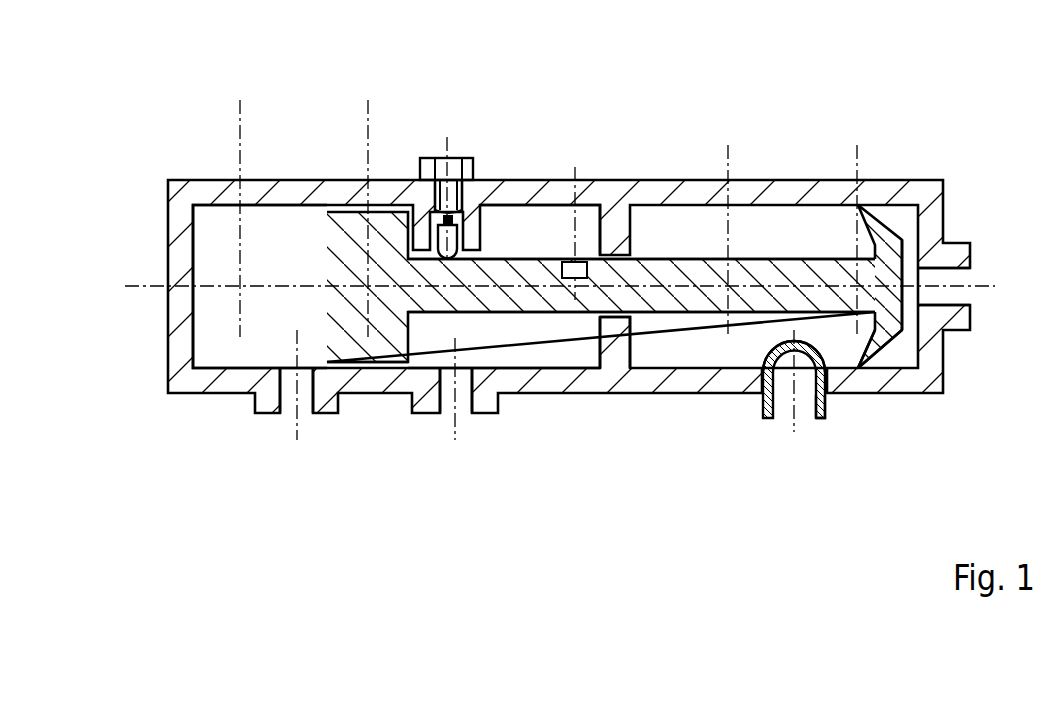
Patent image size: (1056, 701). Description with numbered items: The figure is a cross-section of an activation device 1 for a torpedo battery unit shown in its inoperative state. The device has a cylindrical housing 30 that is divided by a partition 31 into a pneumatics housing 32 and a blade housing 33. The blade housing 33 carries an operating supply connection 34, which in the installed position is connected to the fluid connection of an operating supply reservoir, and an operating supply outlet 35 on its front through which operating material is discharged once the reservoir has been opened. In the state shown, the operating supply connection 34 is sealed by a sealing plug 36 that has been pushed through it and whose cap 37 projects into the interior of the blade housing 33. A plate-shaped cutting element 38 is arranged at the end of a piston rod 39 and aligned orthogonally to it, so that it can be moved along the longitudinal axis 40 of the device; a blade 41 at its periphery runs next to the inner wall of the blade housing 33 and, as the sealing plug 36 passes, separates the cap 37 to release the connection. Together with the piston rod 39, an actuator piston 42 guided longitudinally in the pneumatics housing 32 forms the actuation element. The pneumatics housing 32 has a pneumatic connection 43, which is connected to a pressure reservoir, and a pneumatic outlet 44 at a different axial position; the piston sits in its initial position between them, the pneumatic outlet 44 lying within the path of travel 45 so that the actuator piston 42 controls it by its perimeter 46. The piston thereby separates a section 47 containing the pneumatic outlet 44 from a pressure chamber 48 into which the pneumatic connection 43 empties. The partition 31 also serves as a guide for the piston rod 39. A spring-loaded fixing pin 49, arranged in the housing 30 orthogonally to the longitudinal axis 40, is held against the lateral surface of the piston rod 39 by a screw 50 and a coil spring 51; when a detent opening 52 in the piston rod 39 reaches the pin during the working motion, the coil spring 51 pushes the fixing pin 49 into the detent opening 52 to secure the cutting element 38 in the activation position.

The activation device 1 is at (513, 457).
The cylindrical housing 30 is at (573, 372).
The partition 31 is at (615, 345).
The pneumatics housing 32 is at (521, 222).
The blade housing 33 is at (906, 225).
The operating supply connection 34 is at (778, 432).
The operating supply outlet 35 is at (945, 277).
The sealing plug 36 is at (823, 420).
The cap 37 is at (763, 422).
The cutting element 38 is at (888, 248).
The piston rod 39 is at (645, 277).
The longitudinal axis 40 is at (993, 286).
The blade 41 is at (860, 365).
The actuator piston 42 is at (392, 228).
The pneumatic connection 43 is at (448, 395).
The pneumatic outlet 44 is at (292, 395).
The path of travel 45 is at (240, 105).
The perimeter 46 is at (342, 358).
The section 47 is at (210, 345).
The pressure chamber 48 is at (497, 345).
The fixing pin 49 is at (474, 154).
The screw 50 is at (428, 167).
The coil spring 51 is at (447, 217).
The detent opening 52 is at (575, 267).